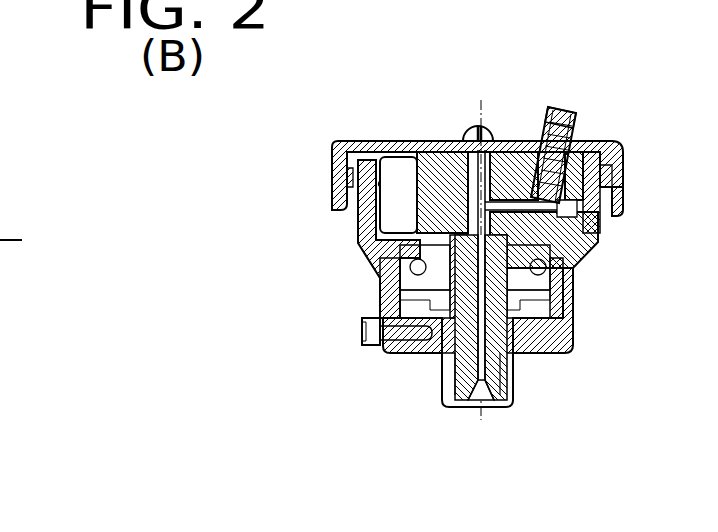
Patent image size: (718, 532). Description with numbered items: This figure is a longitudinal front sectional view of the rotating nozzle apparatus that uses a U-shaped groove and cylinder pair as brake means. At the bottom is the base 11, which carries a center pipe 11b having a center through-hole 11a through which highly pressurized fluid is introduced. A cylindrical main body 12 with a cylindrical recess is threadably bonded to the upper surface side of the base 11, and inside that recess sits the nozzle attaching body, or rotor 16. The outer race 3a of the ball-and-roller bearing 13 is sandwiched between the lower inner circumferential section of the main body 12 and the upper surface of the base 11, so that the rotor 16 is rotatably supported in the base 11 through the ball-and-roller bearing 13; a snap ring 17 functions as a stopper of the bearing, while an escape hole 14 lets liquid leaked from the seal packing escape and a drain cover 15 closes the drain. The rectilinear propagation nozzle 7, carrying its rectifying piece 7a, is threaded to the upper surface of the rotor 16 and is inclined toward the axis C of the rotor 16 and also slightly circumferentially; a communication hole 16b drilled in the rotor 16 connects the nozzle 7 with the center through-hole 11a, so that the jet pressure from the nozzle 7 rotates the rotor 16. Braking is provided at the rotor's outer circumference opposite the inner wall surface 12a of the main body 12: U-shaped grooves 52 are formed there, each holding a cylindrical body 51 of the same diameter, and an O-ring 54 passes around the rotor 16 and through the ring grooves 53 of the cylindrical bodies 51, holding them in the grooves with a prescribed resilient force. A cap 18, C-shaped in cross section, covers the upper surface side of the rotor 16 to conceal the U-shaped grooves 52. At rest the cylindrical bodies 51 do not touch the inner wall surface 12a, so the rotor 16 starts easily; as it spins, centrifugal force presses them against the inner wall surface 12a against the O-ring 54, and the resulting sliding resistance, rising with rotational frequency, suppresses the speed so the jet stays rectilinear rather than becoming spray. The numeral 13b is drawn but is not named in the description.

The O-ring 54 is at (345, 140).
The cylindrical body 51 is at (381, 183).
The U-shaped groove 52 is at (398, 165).
The rotor 16 is at (447, 140).
The communication hole 16b is at (507, 141).
The axis of the rotor C is at (478, 125).
The rectifying piece 7a is at (530, 140).
The rectilinear propagation nozzle 7 is at (580, 118).
The cap 18 is at (333, 160).
The ring groove 53 is at (623, 180).
The cylindrical recess inner wall surface 12a is at (365, 226).
The cylindrical main body 12 is at (360, 238).
The outer race 3a is at (598, 243).
The ball-and-roller bearing 13 is at (577, 272).
The bearing housing wall 13b is at (382, 296).
The snap ring 17 is at (578, 310).
The escape hole 14 is at (585, 340).
The drain cover 15 is at (553, 355).
The base 11 is at (513, 388).
The center through-hole 11a is at (460, 400).
The center pipe 11b is at (442, 360).